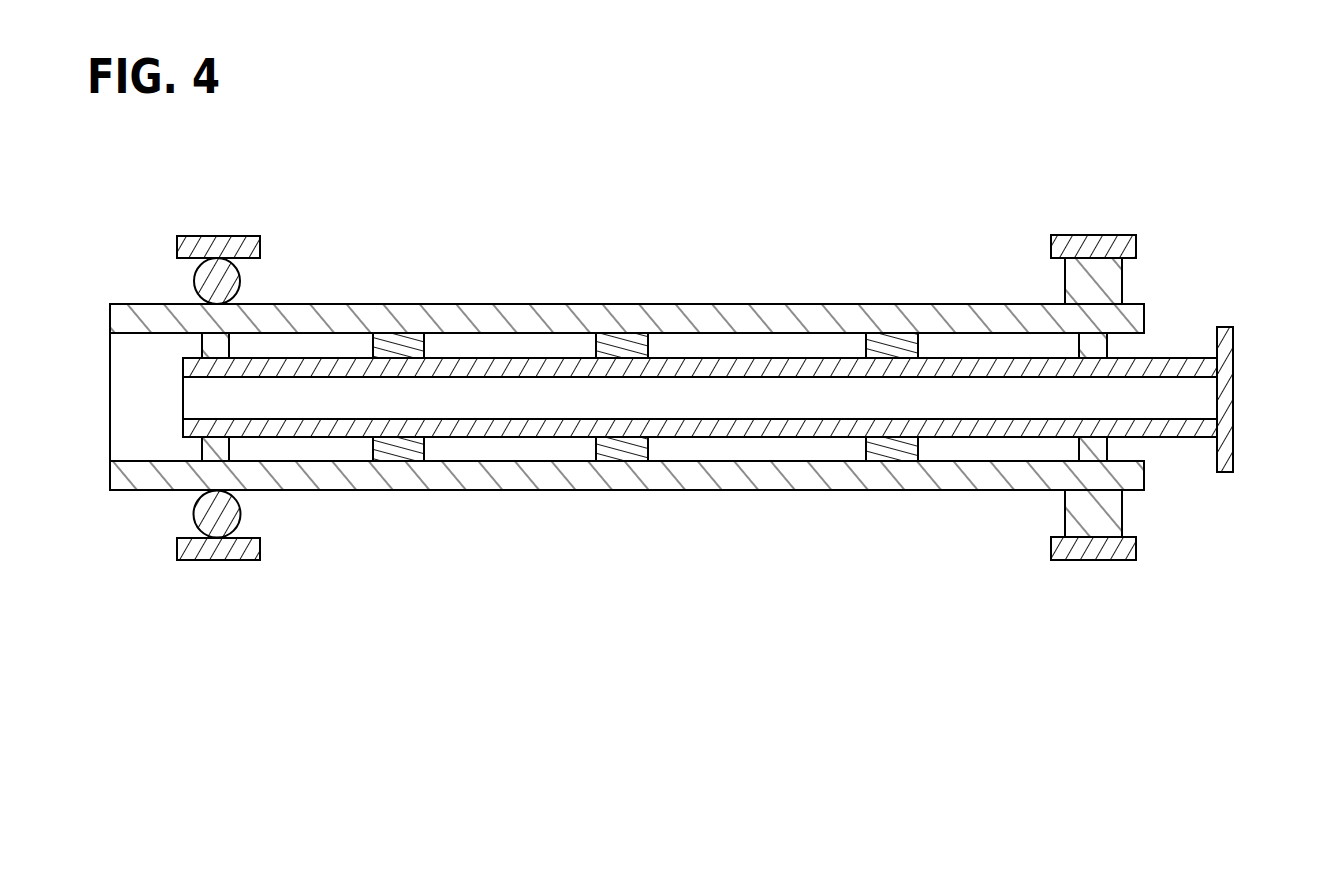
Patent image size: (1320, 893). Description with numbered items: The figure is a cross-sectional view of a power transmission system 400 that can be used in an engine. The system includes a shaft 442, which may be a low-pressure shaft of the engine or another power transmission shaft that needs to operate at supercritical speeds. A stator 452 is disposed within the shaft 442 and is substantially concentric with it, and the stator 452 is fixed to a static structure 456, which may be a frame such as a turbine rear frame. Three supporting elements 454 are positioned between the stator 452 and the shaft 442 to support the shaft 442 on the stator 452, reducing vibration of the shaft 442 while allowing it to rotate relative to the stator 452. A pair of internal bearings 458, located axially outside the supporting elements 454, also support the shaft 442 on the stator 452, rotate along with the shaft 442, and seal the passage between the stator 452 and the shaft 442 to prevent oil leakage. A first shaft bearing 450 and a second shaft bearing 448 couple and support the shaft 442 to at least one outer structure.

The power transmission system 400 is at (969, 175).
The shaft 442 is at (505, 304).
The second shaft bearing 448 is at (1122, 283).
The first shaft bearing 450 is at (241, 282).
The stator 452 is at (1163, 358).
The supporting element 454 is at (425, 444).
The static structure 456 is at (1233, 365).
The internal bearings 458 is at (202, 446).